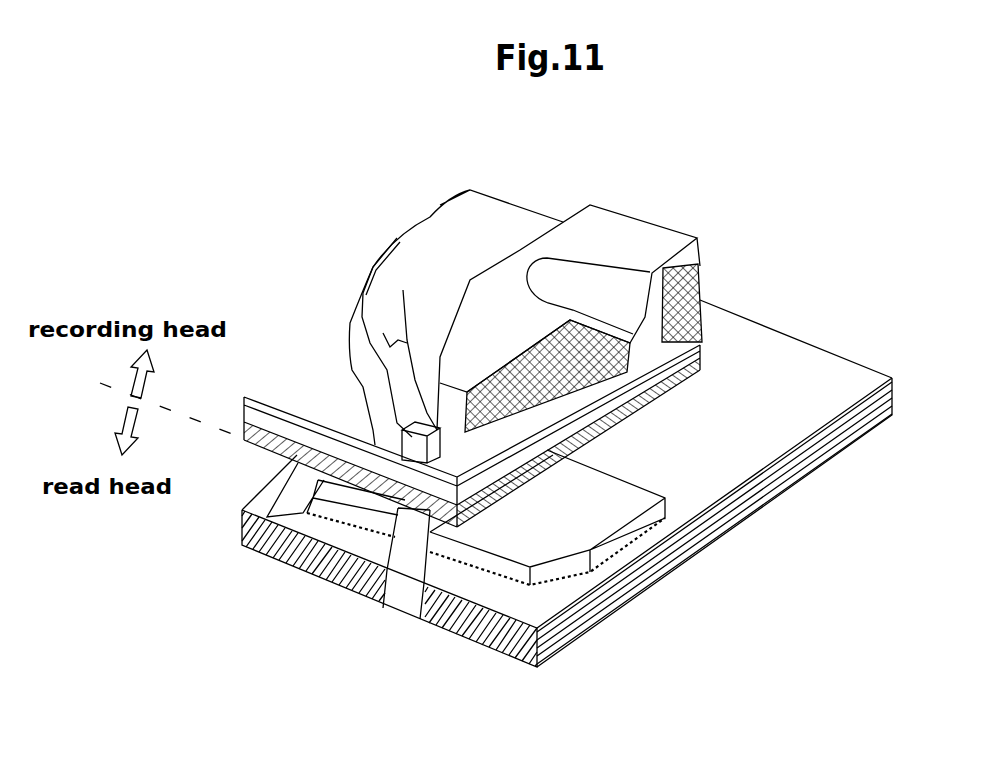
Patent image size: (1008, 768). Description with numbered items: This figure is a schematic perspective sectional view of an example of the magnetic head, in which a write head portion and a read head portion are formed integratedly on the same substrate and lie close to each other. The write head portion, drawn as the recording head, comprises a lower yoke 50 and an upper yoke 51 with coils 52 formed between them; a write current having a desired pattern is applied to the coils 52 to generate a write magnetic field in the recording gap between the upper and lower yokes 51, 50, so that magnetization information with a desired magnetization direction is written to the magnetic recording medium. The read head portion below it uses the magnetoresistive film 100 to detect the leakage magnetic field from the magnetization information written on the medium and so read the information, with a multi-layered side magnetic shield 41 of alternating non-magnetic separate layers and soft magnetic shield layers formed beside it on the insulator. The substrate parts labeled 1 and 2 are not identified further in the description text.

The substrate 1 is at (592, 632).
The base 2 is at (247, 557).
The multi-layered side magnetic shield 41 is at (425, 613).
The lower yoke 50 is at (573, 347).
The upper yoke 51 is at (403, 290).
The coils 52 is at (710, 395).
The magnetoresistive film 100 is at (410, 553).